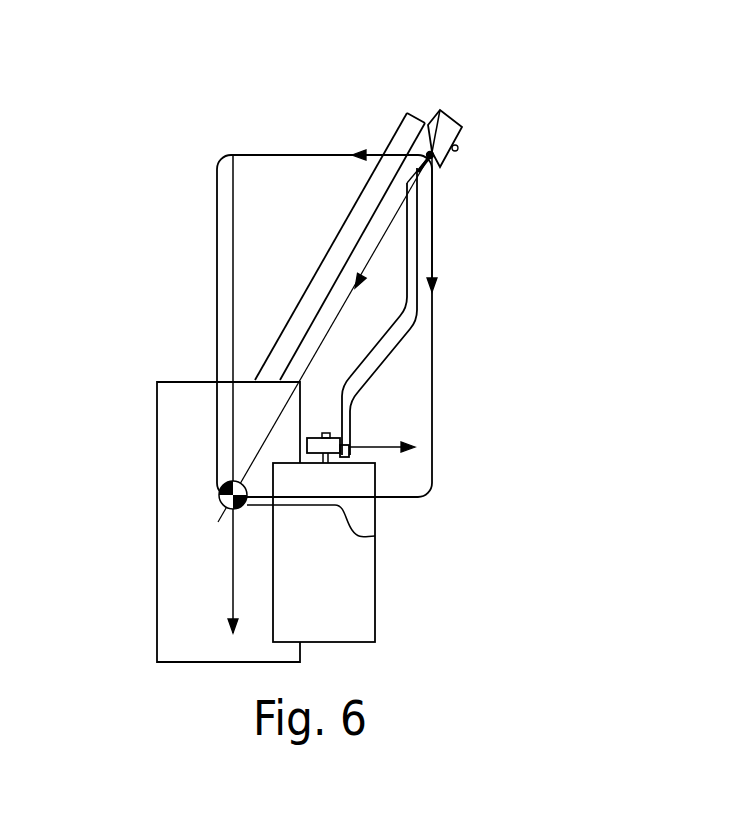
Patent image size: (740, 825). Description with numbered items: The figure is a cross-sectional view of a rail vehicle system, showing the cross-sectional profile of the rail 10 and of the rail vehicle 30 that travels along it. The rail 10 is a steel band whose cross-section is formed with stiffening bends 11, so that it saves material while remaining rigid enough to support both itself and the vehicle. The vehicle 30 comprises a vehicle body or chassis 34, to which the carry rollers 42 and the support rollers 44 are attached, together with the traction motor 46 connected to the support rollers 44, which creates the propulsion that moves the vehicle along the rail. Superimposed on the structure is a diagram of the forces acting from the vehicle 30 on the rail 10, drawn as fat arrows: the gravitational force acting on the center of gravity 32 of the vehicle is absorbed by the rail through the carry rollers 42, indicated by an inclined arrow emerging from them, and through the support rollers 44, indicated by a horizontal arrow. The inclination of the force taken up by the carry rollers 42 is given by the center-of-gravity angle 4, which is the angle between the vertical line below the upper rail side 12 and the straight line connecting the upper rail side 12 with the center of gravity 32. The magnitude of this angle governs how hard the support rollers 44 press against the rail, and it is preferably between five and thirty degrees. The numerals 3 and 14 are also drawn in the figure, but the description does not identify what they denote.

The sampling device 3 is at (375, 536).
The center-of-gravity angle 4 is at (388, 232).
The rail 10 is at (420, 298).
The stiffening bends 11 is at (415, 322).
The upper rail side 12 is at (431, 156).
The valve 14 is at (350, 437).
The rail vehicle 30 is at (258, 183).
The center of gravity 32 is at (218, 497).
The vehicle body (chassis) 34 is at (178, 412).
The carry rollers 42 is at (462, 128).
The support rollers 44 is at (333, 451).
The traction motor 46 is at (362, 593).